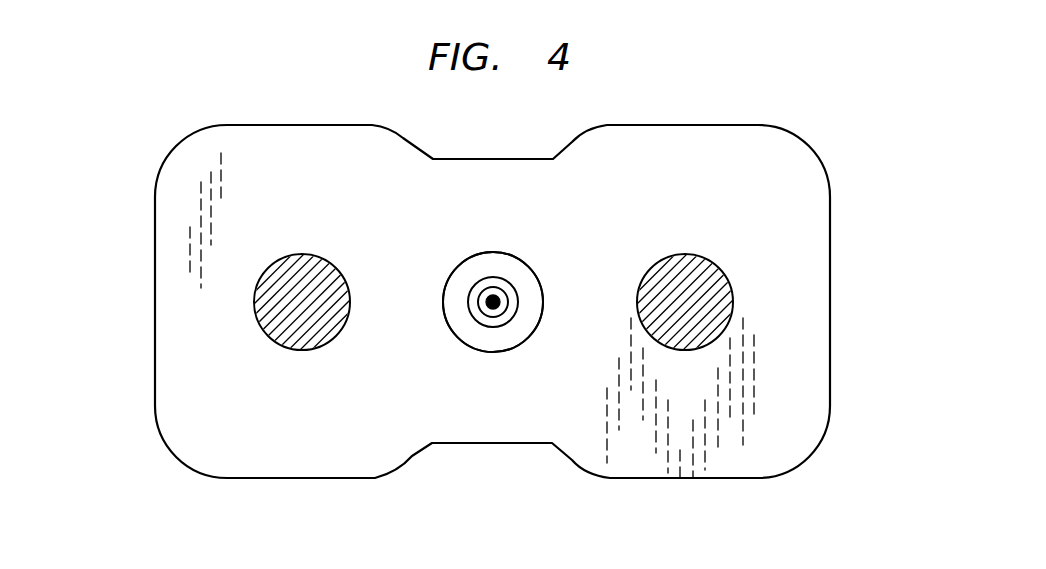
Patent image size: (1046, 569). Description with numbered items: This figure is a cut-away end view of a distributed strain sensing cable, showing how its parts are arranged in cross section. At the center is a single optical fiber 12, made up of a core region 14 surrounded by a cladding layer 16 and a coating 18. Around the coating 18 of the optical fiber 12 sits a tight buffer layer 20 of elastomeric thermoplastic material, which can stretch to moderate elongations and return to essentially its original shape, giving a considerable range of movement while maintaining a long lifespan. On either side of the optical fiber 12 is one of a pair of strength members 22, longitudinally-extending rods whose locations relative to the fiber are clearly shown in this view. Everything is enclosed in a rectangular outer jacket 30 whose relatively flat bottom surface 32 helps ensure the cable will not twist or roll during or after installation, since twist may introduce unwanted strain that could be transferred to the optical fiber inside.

The optical fiber 12 is at (508, 282).
The core region 14 is at (488, 296).
The cladding layer 16 is at (505, 300).
The coating 18 is at (490, 330).
The tight buffer layer 20 is at (458, 337).
The strength members 22 is at (253, 302).
The outer jacket 30 is at (788, 170).
The flat bottom surface 32 is at (677, 478).